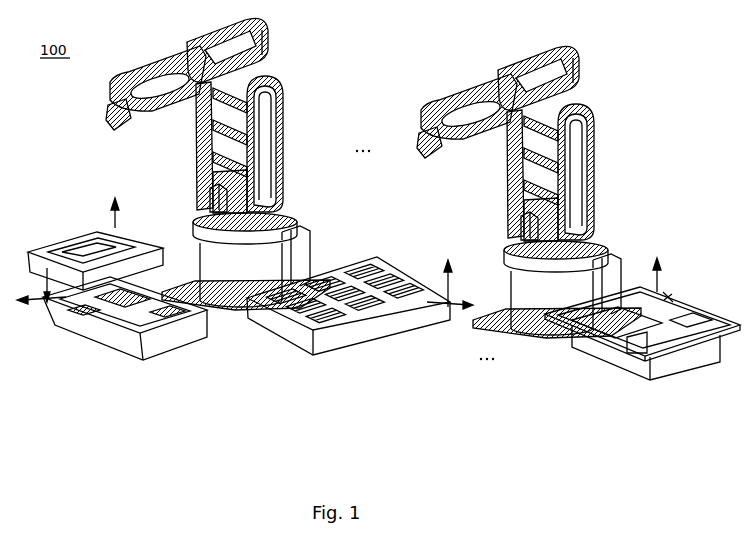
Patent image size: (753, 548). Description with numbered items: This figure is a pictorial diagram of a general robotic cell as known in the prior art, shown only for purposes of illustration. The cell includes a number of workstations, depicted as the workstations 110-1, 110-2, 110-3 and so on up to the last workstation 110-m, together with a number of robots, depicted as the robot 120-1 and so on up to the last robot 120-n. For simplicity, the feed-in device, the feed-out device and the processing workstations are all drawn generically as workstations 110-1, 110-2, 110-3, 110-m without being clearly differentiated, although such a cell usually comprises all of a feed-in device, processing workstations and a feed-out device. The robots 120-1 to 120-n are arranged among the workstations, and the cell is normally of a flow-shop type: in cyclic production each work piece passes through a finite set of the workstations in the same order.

The workstation 110-1 is at (92, 250).
The workstation 110-2 is at (112, 326).
The workstation 110-3 is at (360, 320).
The workstation 110-m is at (642, 333).
The robot 120-1 is at (218, 164).
The robot 120-n is at (534, 192).